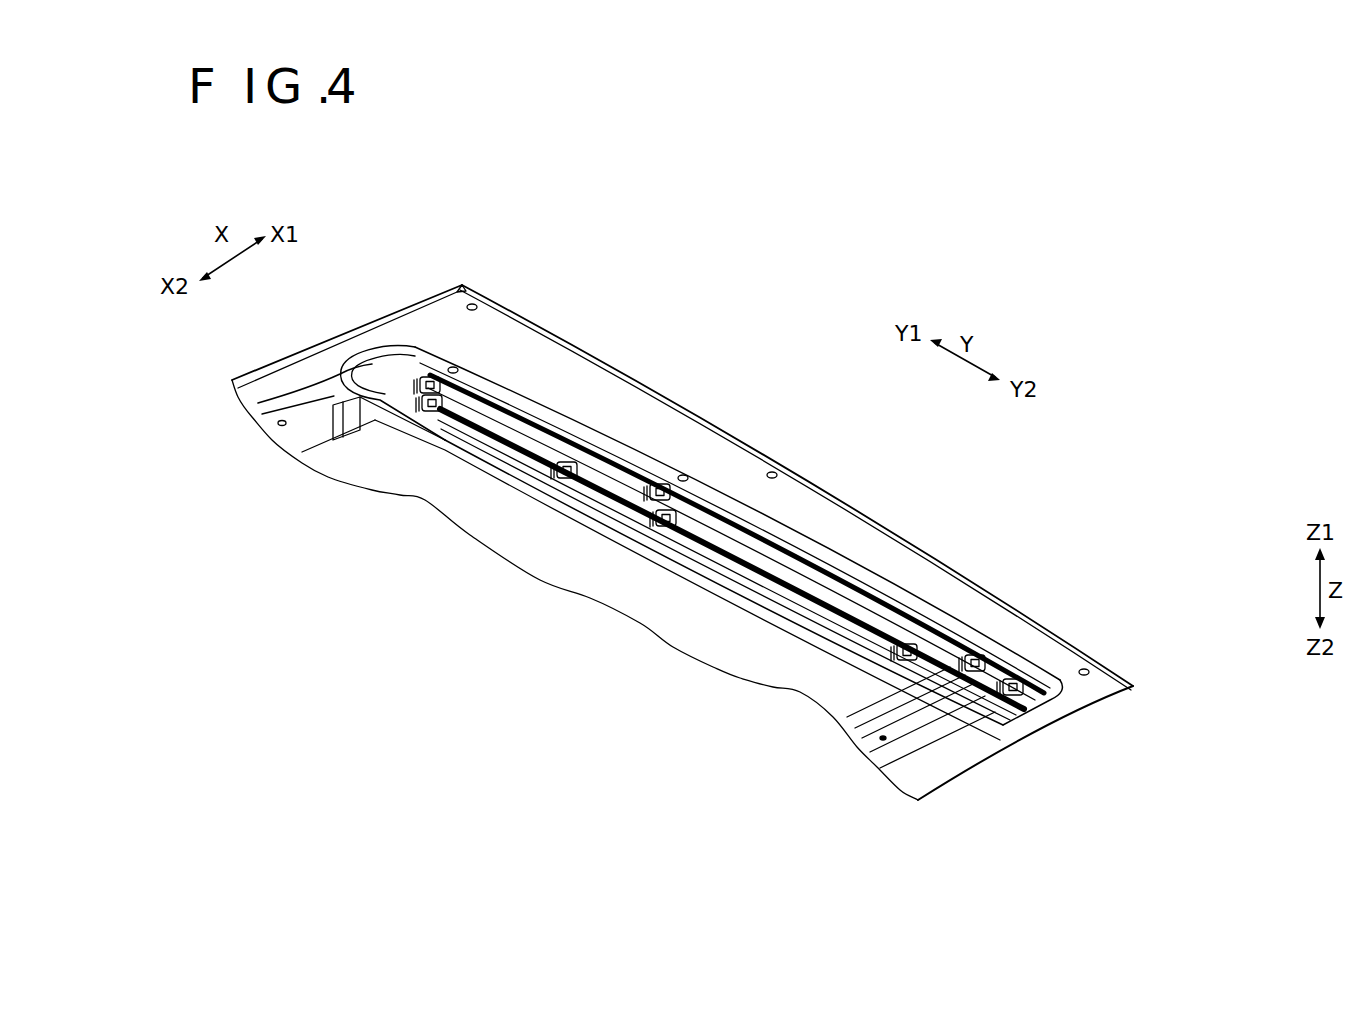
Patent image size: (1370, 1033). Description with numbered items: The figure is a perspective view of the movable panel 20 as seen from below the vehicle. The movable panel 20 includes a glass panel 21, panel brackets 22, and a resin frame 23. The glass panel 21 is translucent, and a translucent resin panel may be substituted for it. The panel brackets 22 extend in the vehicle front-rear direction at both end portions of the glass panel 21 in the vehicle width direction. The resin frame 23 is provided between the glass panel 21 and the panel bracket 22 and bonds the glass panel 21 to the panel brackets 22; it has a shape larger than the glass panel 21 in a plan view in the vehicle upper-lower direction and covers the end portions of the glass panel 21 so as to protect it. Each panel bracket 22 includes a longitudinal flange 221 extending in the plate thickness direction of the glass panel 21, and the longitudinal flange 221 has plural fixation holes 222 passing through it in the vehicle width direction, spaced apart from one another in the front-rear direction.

The movable panel 20 is at (663, 246).
The glass panel 21 is at (542, 577).
The panel bracket 22 is at (385, 355).
The resin frame 23 is at (716, 447).
The longitudinal flange 221 is at (800, 578).
The fixation hole 222 is at (437, 400).